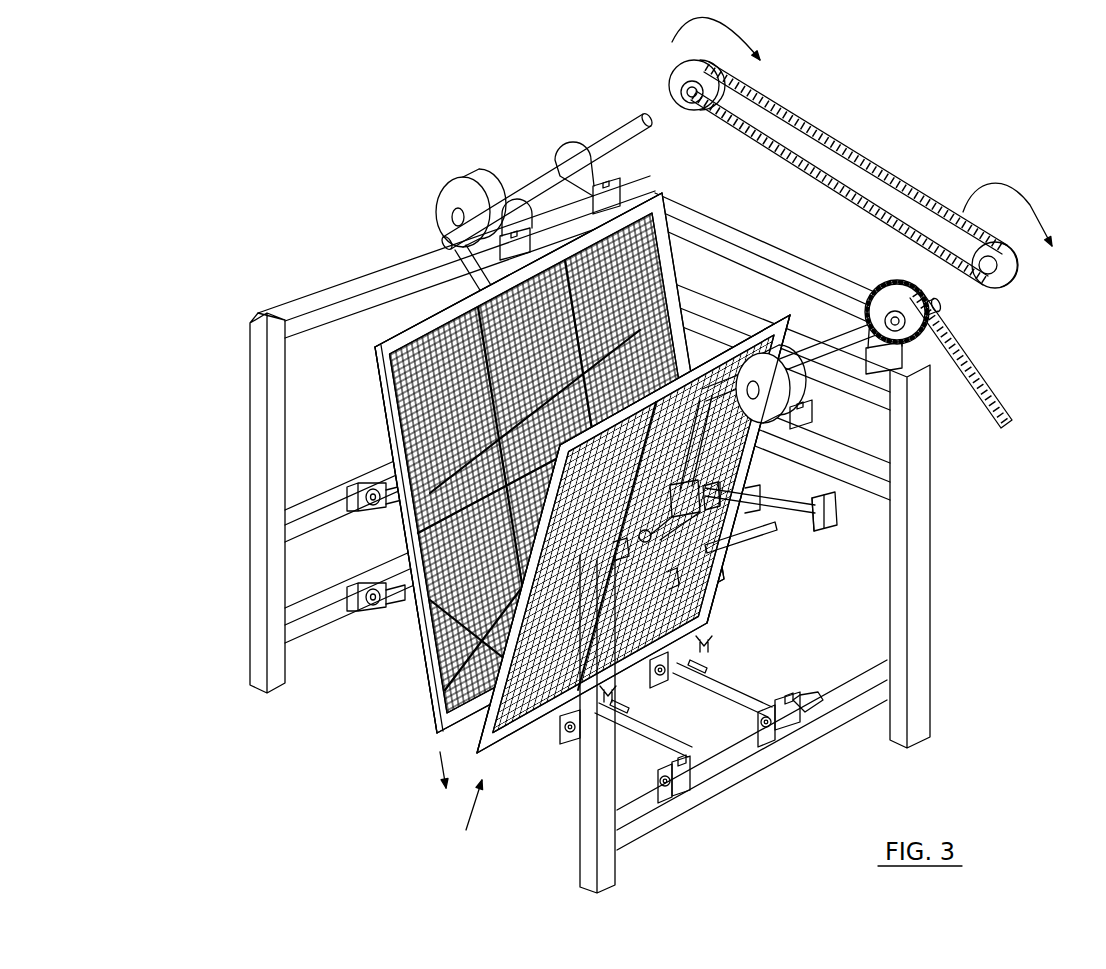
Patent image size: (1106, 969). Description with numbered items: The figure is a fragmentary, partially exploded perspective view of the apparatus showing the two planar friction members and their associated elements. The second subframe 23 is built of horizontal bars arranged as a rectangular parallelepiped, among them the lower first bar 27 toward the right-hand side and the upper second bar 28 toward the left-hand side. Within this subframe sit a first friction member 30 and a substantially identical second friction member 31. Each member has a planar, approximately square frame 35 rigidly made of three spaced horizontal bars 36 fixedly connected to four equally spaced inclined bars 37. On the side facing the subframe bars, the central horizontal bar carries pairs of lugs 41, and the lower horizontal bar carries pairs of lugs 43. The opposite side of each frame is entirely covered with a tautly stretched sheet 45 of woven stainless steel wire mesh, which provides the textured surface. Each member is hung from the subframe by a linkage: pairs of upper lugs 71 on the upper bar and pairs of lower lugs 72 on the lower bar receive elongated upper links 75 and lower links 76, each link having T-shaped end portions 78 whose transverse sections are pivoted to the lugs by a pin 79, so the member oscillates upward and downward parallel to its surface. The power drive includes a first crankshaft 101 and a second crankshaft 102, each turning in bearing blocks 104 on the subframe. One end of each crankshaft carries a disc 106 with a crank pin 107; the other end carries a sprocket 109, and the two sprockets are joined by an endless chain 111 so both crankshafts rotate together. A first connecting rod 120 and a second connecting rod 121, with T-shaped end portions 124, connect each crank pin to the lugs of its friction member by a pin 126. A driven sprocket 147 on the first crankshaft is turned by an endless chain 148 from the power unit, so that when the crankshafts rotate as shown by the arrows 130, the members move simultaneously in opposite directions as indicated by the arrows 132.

The second subframe 23 is at (250, 350).
The lower first support or bar 27 is at (858, 708).
The upper second support or bar 28 is at (303, 497).
The first friction member 30 is at (850, 284).
The second friction member 31 is at (672, 185).
The frame 35 is at (630, 190).
The horizontal bars 36 is at (440, 318).
The inclined bars 37 is at (395, 437).
The pairs of lugs 41 is at (775, 550).
The pairs of lugs 43 is at (712, 650).
The sheet of woven wire mesh material 45 is at (510, 660).
The pairs of upper lugs 71 is at (830, 522).
The pairs of lower lugs 72 is at (795, 720).
The upper links 75 is at (778, 497).
The lower links 76 is at (760, 690).
The T-shaped end portions 78 is at (612, 773).
The pin 79 is at (760, 722).
The first crankshaft 101 is at (815, 355).
The second crankshaft 102 is at (540, 152).
The bearing blocks 104 is at (560, 132).
The disc 106 is at (440, 185).
The crank pin 107 is at (443, 243).
The sprockets 109 is at (672, 78).
The endless chain 111 is at (868, 168).
The first connecting rod 120 is at (745, 335).
The second connecting rod 121 is at (470, 272).
The T-shaped end portions 124 is at (443, 205).
The pin 126 is at (660, 500).
The arrows 130 is at (740, 28).
The arrows 132 is at (472, 795).
The driven sprocket 147 is at (895, 285).
The endless chain 148 is at (965, 360).